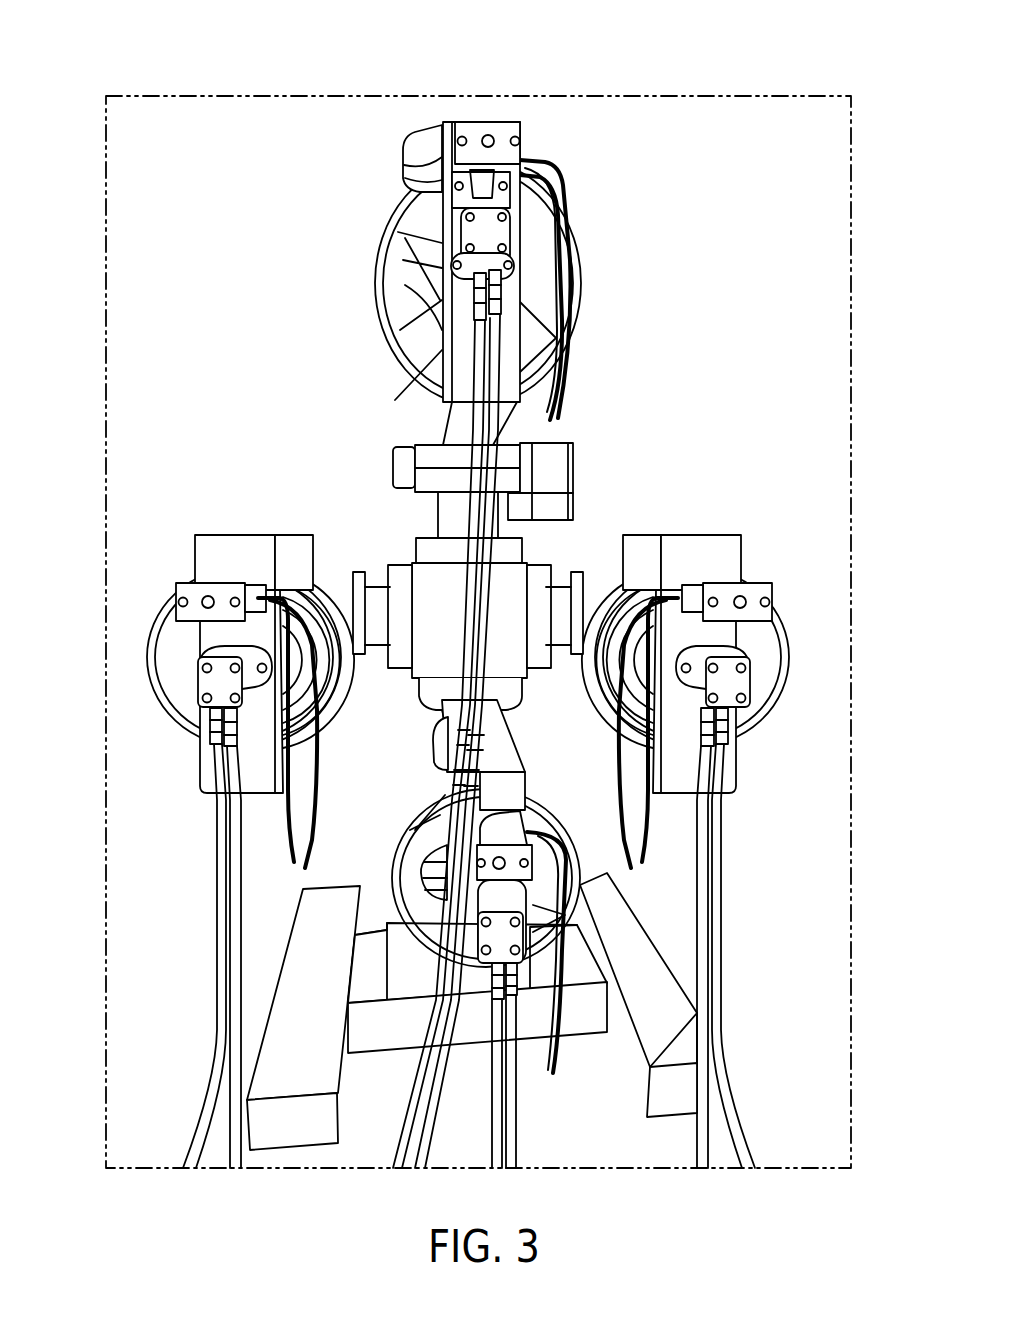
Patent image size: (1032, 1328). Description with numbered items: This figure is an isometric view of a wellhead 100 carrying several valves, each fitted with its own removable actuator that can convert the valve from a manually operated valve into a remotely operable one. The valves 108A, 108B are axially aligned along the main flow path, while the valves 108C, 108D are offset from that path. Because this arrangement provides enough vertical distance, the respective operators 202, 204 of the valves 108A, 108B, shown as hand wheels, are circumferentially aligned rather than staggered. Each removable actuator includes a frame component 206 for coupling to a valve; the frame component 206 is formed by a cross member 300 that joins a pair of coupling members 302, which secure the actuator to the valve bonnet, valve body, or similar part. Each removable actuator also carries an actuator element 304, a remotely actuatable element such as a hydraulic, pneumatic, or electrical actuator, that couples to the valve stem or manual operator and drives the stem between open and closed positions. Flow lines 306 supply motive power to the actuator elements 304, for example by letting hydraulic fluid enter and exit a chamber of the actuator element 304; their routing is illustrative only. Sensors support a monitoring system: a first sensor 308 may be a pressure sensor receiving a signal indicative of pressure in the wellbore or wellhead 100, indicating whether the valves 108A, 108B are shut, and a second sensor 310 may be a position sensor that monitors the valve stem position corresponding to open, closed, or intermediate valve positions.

The wellhead 100 is at (776, 72).
The operator 202 is at (391, 239).
The operator 204 is at (608, 934).
The frame component 206 is at (475, 796).
The valve 108A is at (440, 300).
The valve 108B is at (492, 812).
The valve 108C is at (305, 595).
The valve 108D is at (605, 595).
The cross member 300 is at (226, 558).
The coupling member 302 is at (288, 556).
The actuator element 304 is at (735, 668).
The flow line 306 is at (220, 952).
The first sensor 308 is at (481, 128).
The second sensor 310 is at (740, 588).